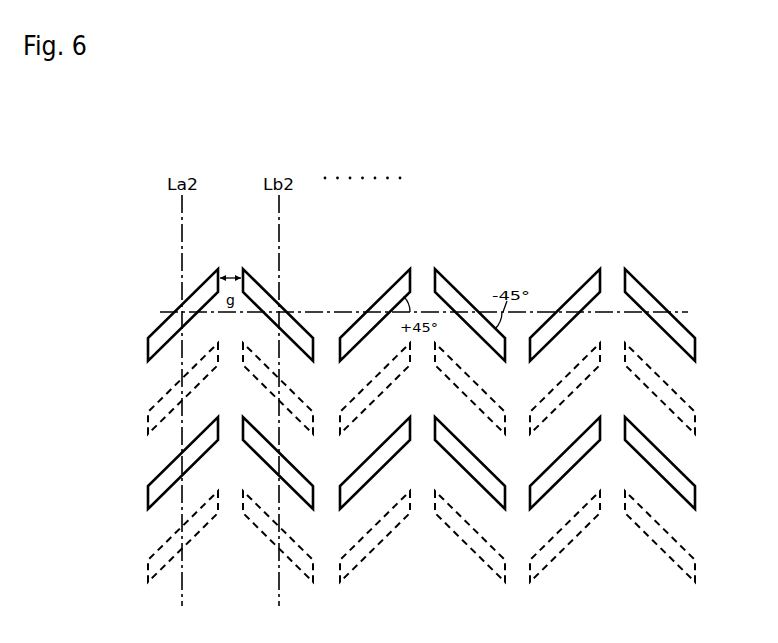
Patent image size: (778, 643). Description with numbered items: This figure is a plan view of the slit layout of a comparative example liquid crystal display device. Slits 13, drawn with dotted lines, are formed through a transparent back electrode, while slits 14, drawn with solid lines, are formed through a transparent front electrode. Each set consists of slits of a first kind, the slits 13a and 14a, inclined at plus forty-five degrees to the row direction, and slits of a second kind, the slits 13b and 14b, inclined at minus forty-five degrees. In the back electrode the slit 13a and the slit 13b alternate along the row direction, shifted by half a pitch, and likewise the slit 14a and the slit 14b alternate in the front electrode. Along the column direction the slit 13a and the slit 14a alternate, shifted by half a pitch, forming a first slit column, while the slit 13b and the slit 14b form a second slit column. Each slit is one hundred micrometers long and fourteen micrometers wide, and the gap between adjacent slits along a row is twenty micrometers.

The slits 14 is at (147, 348).
The slit of the first kind 14a is at (163, 473).
The slit of the second kind 14b is at (288, 460).
The slits 13 is at (147, 427).
The slit of the first kind 13a is at (169, 540).
The slit of the second kind 13b is at (257, 524).